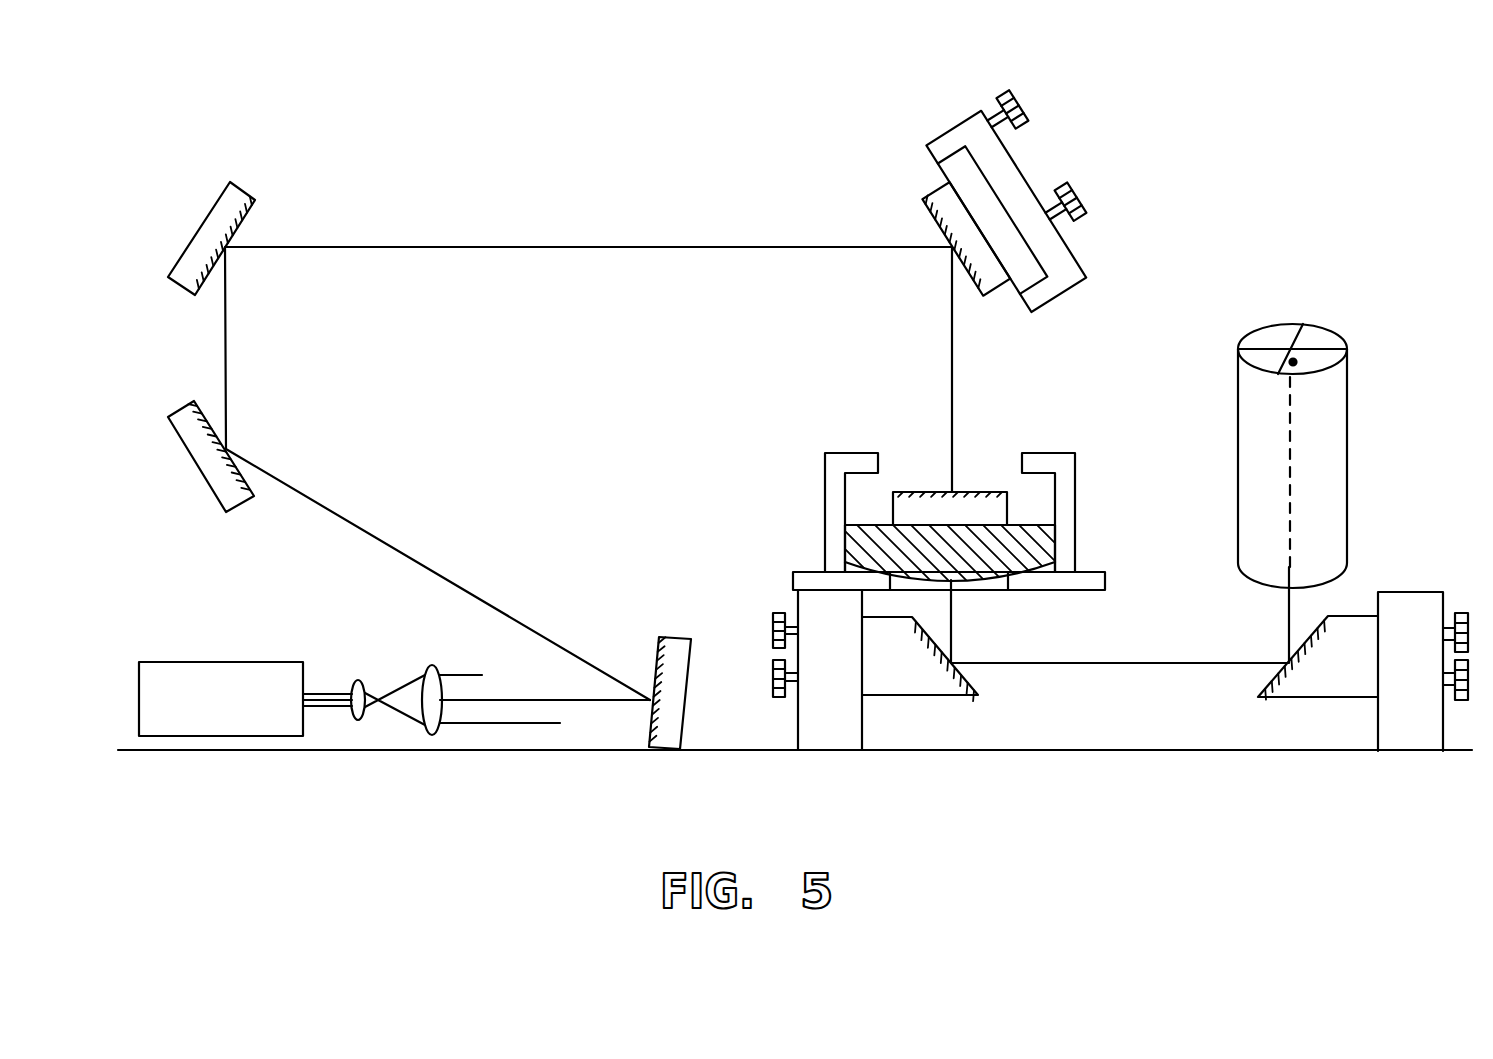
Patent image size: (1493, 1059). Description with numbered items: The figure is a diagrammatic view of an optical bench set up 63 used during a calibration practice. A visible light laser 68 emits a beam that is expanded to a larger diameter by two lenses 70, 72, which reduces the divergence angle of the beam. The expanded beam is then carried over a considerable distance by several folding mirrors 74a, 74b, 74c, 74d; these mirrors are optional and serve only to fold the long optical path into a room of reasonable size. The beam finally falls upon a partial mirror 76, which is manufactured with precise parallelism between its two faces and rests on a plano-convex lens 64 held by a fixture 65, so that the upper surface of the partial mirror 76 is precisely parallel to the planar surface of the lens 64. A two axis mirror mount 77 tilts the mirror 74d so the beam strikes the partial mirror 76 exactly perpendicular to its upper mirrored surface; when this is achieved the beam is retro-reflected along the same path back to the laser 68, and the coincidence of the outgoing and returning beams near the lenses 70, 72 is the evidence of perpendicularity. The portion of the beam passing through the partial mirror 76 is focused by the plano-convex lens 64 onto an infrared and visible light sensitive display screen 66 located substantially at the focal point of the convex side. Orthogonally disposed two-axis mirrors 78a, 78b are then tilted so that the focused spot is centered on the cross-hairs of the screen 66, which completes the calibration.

The optical bench set up 63 is at (648, 145).
The plano-convex lens 64 is at (1033, 550).
The fixture 65 is at (1038, 452).
The infrared and visible light sensitive display screen 66 is at (1347, 463).
The visible light laser 68 is at (255, 661).
The lens 70 is at (359, 678).
The lens 72 is at (432, 665).
The mirror 74a is at (693, 650).
The mirror 74b is at (190, 462).
The mirror 74c is at (196, 234).
The mirror 74d is at (928, 216).
The partial mirror 76 is at (925, 492).
The two axis mirror mount 77 is at (1075, 252).
The two-axis mirror 78a is at (908, 697).
The two-axis mirror 78b is at (1340, 697).